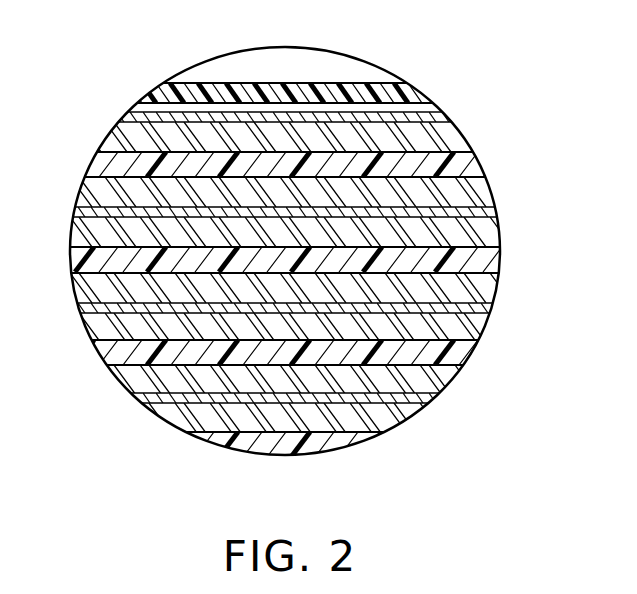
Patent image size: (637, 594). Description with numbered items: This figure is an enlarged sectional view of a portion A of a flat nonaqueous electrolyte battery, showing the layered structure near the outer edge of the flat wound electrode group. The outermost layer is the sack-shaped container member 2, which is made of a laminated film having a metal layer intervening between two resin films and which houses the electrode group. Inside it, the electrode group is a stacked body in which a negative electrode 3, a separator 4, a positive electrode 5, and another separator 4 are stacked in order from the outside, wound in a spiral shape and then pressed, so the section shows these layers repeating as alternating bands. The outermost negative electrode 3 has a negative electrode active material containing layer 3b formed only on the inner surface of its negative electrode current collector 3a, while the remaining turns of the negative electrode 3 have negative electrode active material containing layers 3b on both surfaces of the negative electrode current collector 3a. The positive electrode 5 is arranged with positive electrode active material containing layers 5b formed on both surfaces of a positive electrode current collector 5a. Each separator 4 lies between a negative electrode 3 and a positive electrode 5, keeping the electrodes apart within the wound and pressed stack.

The portion A is at (188, 83).
The container member 2 is at (412, 95).
The negative electrode 3 is at (325, 222).
The negative electrode current collector 3a is at (447, 118).
The negative electrode active material containing layer 3b is at (438, 140).
The separator 4 is at (112, 165).
The positive electrode 5 is at (324, 321).
The positive electrode current collector 5a is at (467, 215).
The positive electrode active material containing layer 5b is at (462, 198).